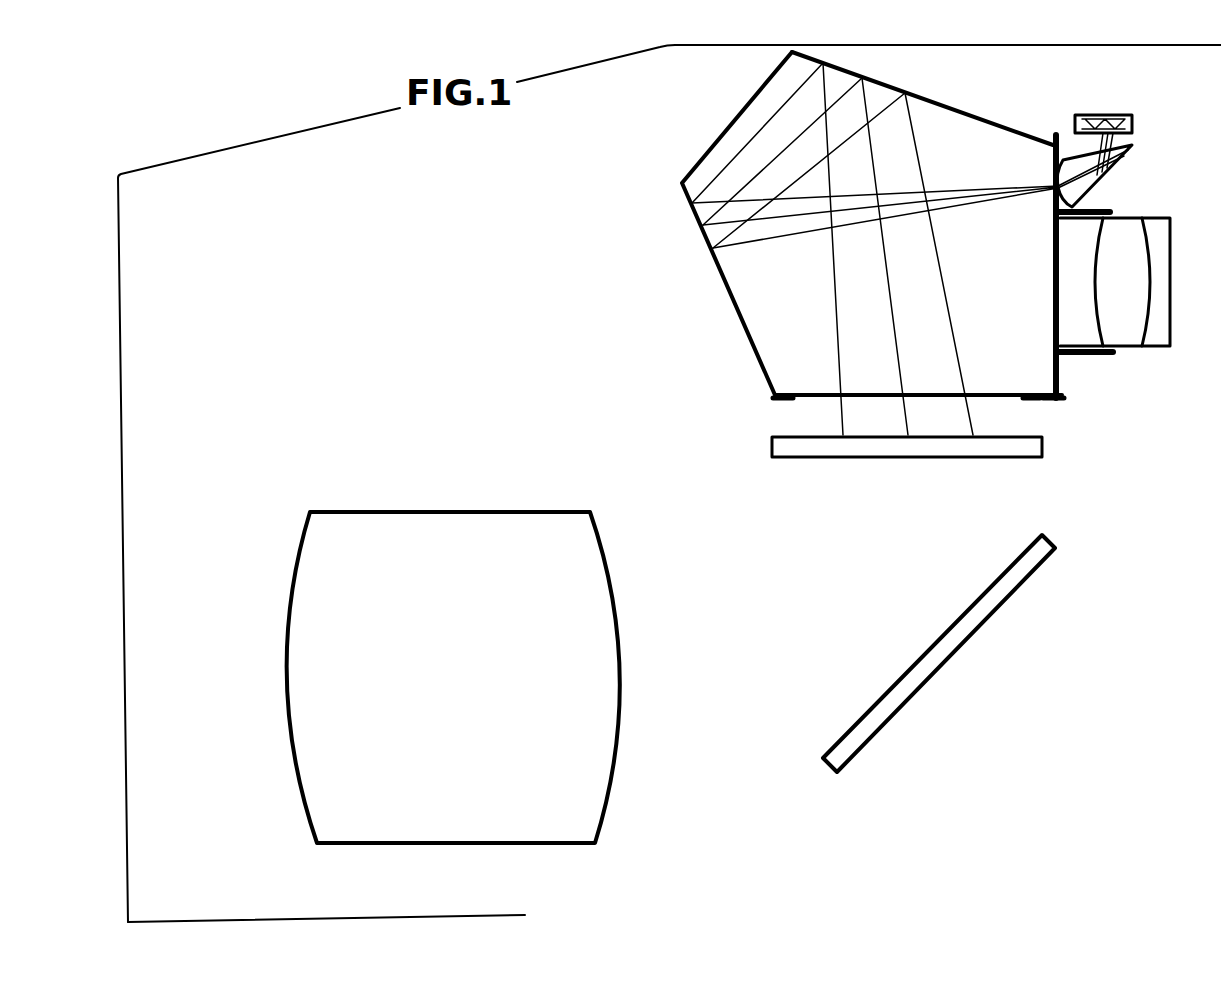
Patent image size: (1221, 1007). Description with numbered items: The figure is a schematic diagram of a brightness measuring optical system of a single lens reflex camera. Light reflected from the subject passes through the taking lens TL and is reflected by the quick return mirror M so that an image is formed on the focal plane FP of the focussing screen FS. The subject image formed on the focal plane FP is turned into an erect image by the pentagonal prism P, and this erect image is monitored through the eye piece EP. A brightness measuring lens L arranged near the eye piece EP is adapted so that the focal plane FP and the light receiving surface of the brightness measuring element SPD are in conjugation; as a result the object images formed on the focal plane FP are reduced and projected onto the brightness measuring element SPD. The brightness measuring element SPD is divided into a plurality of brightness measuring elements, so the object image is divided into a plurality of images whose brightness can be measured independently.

The pentagonal prism P is at (983, 118).
The brightness measuring element SPD is at (1110, 113).
The brightness measuring lens L is at (1132, 147).
The eye piece EP is at (1127, 350).
The focal plane FP is at (1013, 428).
The focussing screen FS is at (1042, 445).
The quick return mirror M is at (1010, 570).
The taking lens TL is at (587, 847).